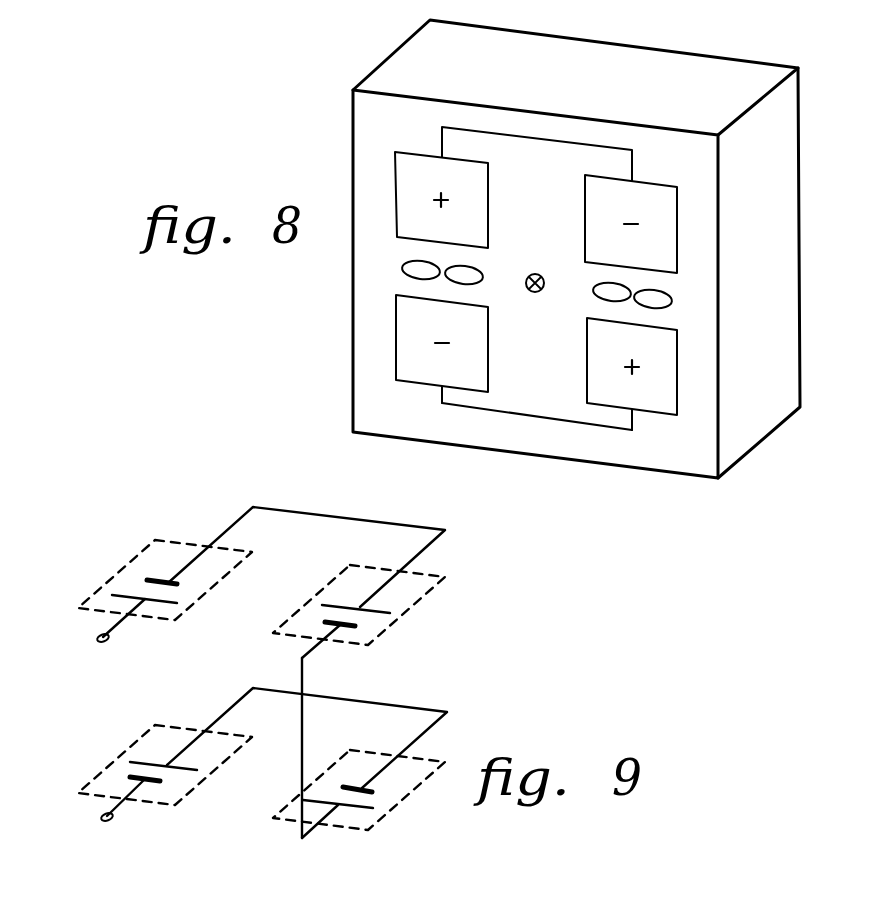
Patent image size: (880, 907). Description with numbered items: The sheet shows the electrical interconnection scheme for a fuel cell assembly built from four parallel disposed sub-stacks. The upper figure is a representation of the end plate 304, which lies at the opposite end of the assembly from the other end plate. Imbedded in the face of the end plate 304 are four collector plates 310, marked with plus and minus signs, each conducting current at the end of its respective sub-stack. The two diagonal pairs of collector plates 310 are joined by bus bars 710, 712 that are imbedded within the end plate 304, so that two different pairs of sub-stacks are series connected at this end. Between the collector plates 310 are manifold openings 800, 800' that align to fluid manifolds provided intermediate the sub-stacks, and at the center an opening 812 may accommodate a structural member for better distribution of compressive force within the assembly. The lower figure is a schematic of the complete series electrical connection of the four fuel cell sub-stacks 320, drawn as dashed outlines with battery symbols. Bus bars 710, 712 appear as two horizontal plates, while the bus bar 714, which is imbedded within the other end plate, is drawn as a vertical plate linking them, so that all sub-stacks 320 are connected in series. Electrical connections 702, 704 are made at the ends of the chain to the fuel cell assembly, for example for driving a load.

In FIG. 8, the end plate 304 is at (417, 70).
In FIG. 8, the bus bar 710 is at (602, 145).
In FIG. 9, the bus bar 710 is at (335, 514).
In FIG. 8, the bus bar 712 is at (533, 414).
In FIG. 9, the bus bar 712 is at (335, 697).
In FIG. 9, the bus bar 714 is at (303, 718).
In FIG. 8, the collector plates 310 is at (585, 215).
In FIG. 9, the fuel cell sub-stacks 320 is at (288, 622).
In FIG. 8, the opening 812 is at (535, 274).
In FIG. 8, the manifold openings 800 is at (381, 297).
In FIG. 8, the manifold openings 800' is at (691, 323).
In FIG. 9, the electrical connection 702 is at (97, 640).
In FIG. 9, the electrical connection 704 is at (100, 818).